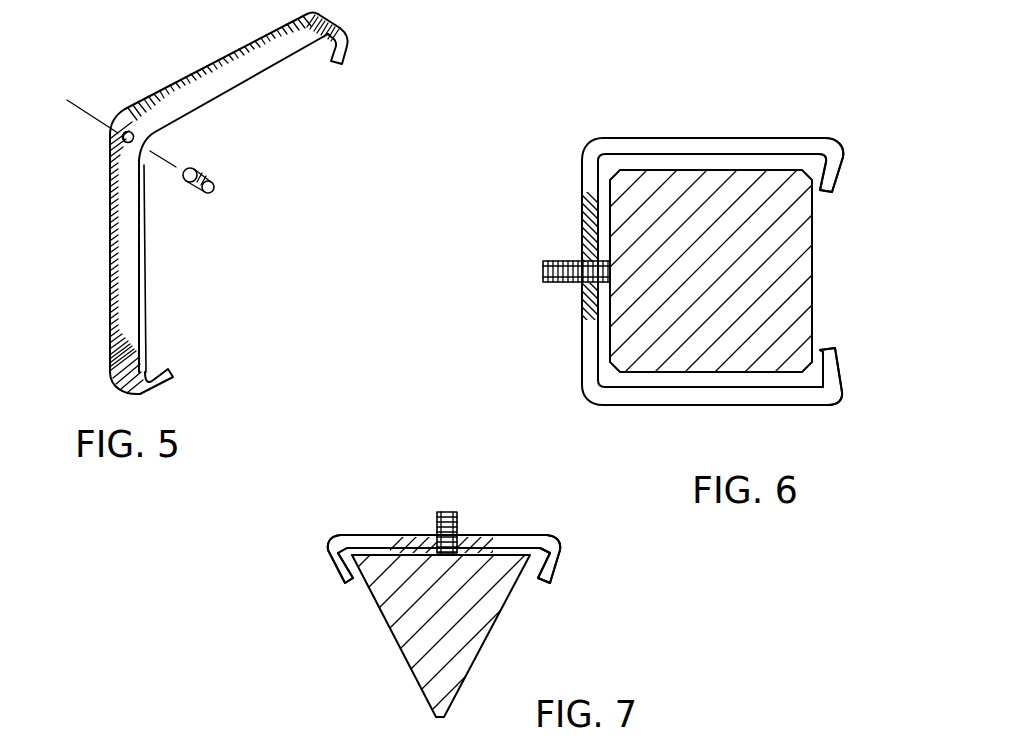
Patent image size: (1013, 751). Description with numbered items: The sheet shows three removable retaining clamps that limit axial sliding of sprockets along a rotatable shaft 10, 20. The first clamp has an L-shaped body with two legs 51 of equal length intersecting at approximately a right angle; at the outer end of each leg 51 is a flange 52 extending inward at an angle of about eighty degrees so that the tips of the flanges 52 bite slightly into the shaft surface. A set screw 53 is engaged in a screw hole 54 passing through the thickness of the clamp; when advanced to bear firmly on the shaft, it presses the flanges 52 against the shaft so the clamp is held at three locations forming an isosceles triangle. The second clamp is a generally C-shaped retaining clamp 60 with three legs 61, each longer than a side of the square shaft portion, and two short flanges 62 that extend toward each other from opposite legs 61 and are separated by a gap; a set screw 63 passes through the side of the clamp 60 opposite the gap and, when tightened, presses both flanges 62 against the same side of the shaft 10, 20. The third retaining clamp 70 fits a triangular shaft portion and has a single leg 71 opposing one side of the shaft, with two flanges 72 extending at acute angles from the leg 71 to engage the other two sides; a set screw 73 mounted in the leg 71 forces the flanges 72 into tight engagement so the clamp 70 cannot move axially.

In FIG. 6, the rotatable shaft 10 is at (711, 271).
In FIG. 7, the rotatable shaft 10 is at (413, 636).
In FIG. 6, the rotatable shaft 20 is at (810, 287).
In FIG. 7, the rotatable shaft 20 is at (417, 672).
In FIG. 5, the leg 51 is at (185, 88).
In FIG. 5, the flange 52 is at (325, 63).
In FIG. 5, the set screw 53 is at (200, 170).
In FIG. 5, the screw hole 54 is at (115, 134).
In FIG. 6, the retaining clamp 60 is at (686, 267).
In FIG. 6, the leg 61 is at (740, 138).
In FIG. 6, the flange 62 is at (840, 173).
In FIG. 6, the set screw 63 is at (557, 283).
In FIG. 7, the retaining clamp 70 is at (449, 529).
In FIG. 7, the leg 71 is at (382, 535).
In FIG. 7, the flange 72 is at (332, 575).
In FIG. 7, the set screw 73 is at (460, 513).